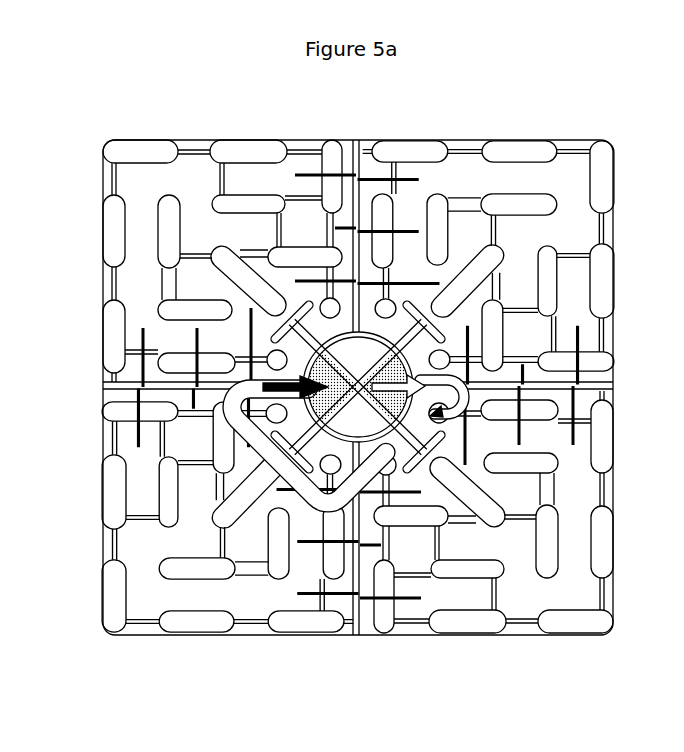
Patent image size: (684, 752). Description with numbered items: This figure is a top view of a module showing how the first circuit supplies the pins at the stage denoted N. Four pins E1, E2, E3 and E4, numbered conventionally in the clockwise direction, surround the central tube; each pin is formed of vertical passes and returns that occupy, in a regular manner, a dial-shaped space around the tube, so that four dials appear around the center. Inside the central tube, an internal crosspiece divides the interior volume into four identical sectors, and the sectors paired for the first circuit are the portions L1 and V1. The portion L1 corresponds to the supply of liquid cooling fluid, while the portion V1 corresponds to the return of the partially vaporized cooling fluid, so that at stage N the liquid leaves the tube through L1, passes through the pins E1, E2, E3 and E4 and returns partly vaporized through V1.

The pin E1 is at (192, 204).
The pin E2 is at (548, 227).
The pin E3 is at (548, 493).
The pin E4 is at (166, 520).
The portion V1 is at (322, 370).
The portion L1 is at (402, 370).
The stage N is at (359, 712).